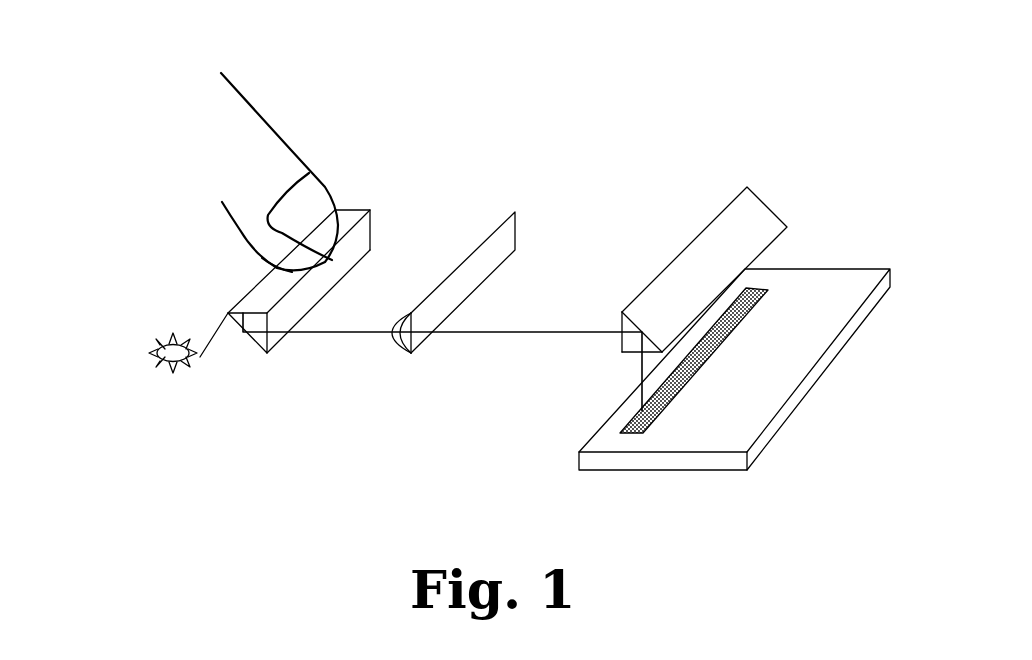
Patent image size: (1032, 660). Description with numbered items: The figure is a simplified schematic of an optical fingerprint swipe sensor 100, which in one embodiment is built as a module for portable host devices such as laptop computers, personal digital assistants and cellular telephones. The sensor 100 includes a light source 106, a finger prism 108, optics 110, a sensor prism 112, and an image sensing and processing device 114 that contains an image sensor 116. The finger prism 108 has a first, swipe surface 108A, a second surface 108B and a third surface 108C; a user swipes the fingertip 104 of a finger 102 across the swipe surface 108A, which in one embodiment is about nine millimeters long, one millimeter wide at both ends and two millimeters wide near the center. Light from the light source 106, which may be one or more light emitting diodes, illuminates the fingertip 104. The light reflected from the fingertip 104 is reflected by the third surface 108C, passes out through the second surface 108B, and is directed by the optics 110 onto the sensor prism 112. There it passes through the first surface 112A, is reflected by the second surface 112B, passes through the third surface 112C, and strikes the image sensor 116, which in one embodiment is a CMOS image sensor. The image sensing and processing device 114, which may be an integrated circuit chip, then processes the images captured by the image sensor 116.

The optical fingerprint swipe sensor 100 is at (108, 184).
The finger 102 is at (272, 147).
The fingertip 104 is at (238, 263).
The light source 106 is at (150, 353).
The finger prism 108 is at (269, 283).
The first (swipe) surface 108A is at (240, 301).
The second surface 108B is at (360, 242).
The third surface 108C is at (250, 344).
The optics 110 is at (409, 368).
The sensor prism 112 is at (703, 256).
The first surface 112A is at (620, 313).
The second surface 112B is at (757, 218).
The third surface 112C is at (628, 353).
The image sensing and processing device 114 is at (754, 382).
The image sensor 116 is at (673, 397).